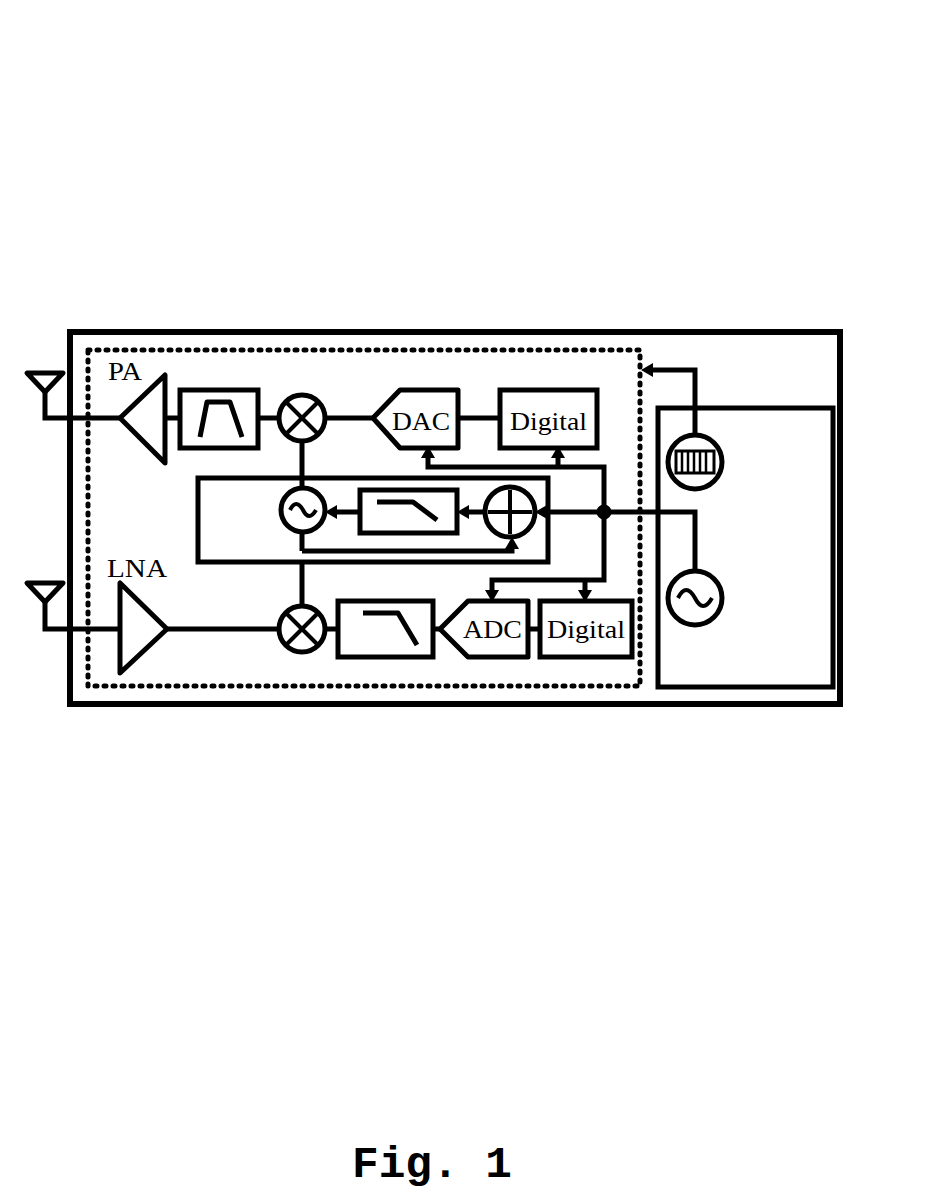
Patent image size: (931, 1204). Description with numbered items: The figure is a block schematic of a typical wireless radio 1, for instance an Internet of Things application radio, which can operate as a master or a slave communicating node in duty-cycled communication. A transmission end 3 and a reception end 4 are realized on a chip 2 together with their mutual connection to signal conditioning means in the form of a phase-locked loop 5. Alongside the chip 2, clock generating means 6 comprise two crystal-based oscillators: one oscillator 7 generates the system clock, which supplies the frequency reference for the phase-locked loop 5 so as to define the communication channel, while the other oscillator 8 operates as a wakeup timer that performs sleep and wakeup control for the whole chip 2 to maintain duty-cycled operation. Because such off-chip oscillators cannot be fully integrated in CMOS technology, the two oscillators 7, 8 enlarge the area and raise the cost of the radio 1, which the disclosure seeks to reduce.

The wireless radio 1 is at (150, 97).
The chip 2 is at (341, 349).
The transmission end 3 is at (60, 423).
The reception end 4 is at (62, 634).
The phase-locked loop (PLL) 5 is at (255, 564).
The clock generating means 6 is at (768, 688).
The system clock oscillator 7 is at (690, 627).
The wakeup timer oscillator 8 is at (680, 434).